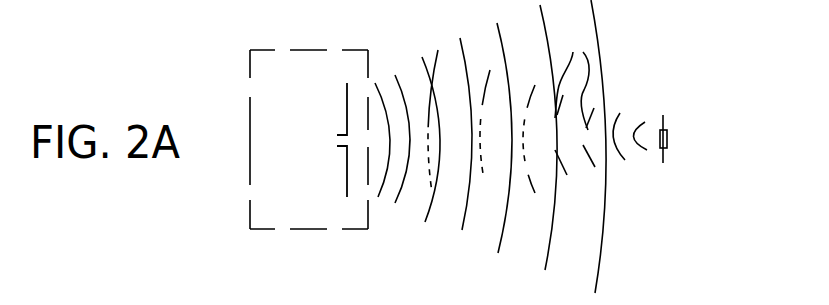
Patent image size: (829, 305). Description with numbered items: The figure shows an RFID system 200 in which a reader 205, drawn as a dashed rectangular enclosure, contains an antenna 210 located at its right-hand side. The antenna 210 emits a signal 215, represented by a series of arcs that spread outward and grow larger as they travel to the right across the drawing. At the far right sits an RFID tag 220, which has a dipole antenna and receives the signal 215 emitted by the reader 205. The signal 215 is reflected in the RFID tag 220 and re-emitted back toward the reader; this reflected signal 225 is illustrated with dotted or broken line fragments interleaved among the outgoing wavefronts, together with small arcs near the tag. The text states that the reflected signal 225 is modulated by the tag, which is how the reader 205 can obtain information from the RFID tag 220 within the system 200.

The RFID system 200 is at (213, 227).
The reader 205 is at (270, 50).
The antenna 210 is at (347, 115).
The signal 215 is at (548, 232).
The RFID tag 220 is at (667, 134).
The reflected signal 225 is at (601, 101).